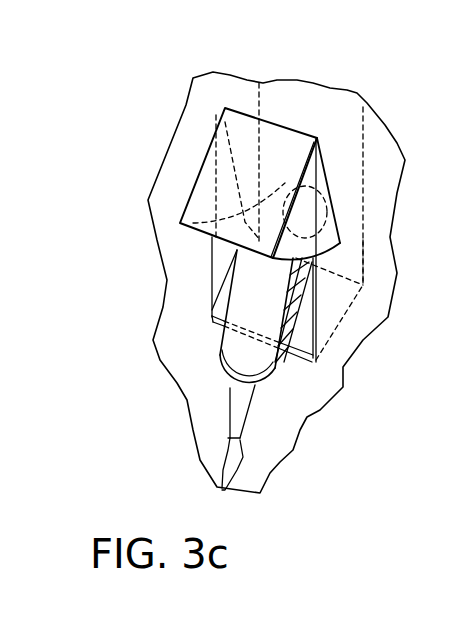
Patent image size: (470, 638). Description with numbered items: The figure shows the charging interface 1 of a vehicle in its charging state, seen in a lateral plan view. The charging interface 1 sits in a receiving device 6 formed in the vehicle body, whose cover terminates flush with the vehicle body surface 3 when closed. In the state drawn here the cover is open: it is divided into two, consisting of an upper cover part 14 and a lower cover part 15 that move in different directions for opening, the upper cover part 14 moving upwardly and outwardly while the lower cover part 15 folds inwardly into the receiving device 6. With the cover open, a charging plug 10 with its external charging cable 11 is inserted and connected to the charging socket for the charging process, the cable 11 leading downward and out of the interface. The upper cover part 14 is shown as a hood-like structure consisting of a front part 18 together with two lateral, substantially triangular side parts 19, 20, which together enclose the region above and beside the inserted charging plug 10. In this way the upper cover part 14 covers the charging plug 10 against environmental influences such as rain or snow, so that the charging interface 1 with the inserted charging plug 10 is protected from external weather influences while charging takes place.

The charging interface 1 is at (203, 86).
The vehicle body surface 3 is at (300, 101).
The receiving device 6 is at (303, 332).
The charging plug 10 is at (220, 347).
The external charging cable 11 is at (215, 471).
The upper cover part 14 is at (193, 150).
The lower cover part 15 is at (337, 327).
The front part 18 is at (285, 168).
The side part 19 is at (302, 228).
The side part 20 is at (200, 202).